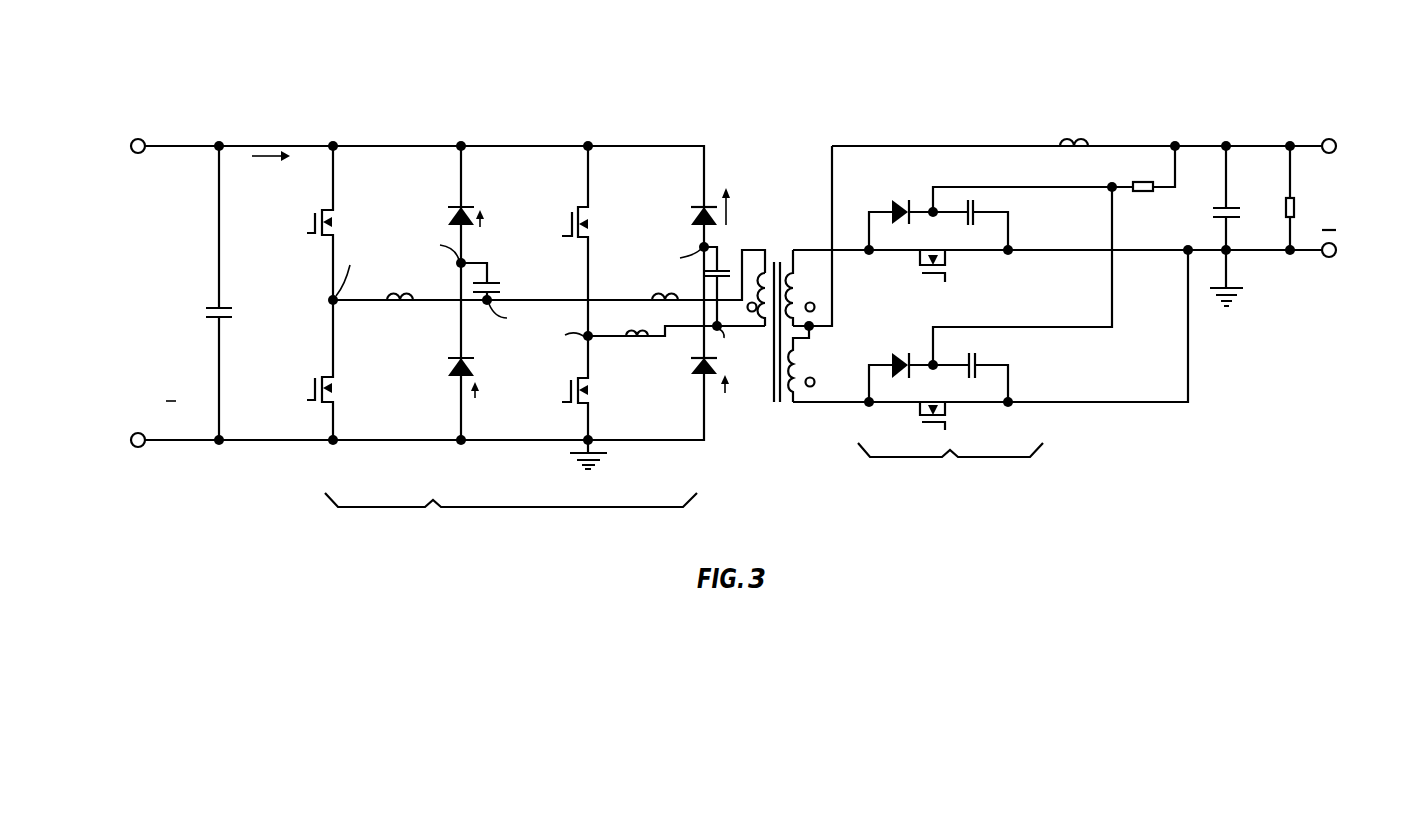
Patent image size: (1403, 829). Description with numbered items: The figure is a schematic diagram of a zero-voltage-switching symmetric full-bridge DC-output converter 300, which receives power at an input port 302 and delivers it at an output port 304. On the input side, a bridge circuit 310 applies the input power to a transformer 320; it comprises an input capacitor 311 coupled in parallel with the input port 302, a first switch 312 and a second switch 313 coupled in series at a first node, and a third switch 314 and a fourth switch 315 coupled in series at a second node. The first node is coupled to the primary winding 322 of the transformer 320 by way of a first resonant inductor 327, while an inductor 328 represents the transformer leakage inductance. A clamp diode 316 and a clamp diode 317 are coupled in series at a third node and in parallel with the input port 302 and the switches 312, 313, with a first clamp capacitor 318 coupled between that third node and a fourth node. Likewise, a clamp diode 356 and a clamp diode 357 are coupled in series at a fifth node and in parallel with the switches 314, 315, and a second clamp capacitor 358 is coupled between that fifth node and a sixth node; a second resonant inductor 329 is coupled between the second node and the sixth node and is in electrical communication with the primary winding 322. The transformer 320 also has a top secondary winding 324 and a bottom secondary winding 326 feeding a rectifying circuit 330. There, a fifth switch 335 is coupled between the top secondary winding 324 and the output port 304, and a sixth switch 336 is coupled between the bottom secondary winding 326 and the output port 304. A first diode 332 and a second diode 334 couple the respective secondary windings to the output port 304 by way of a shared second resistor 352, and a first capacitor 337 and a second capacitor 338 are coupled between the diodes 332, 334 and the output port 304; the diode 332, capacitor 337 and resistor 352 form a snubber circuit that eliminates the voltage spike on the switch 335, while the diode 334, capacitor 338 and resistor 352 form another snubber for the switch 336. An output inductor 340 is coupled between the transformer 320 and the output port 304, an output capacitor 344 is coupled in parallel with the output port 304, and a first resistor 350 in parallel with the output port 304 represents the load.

The ZVS symmetric full-bridge DC-output converter 300 is at (566, 92).
The input port 302 is at (144, 139).
The output port 304 is at (1326, 139).
The bridge circuit 310 is at (511, 519).
The input capacitor 311 is at (222, 304).
The first switch 312 is at (308, 233).
The second switch 313 is at (308, 399).
The third switch 314 is at (562, 236).
The fourth switch 315 is at (562, 402).
The clamp diode 316 is at (450, 215).
The clamp diode 317 is at (450, 372).
The first clamp capacitor 318 is at (502, 283).
The transformer 320 is at (800, 412).
The primary winding 322 is at (759, 325).
The top secondary winding 324 is at (793, 272).
The bottom secondary winding 326 is at (792, 392).
The first resonant inductor 327 is at (410, 293).
The inductor 328 is at (656, 294).
The second resonant inductor 329 is at (645, 330).
The rectifying circuit 330 is at (1025, 322).
The first diode 332 is at (890, 210).
The second diode 334 is at (891, 363).
The fifth switch 335 is at (930, 270).
The sixth switch 336 is at (950, 428).
The first capacitor 337 is at (985, 205).
The second capacitor 338 is at (985, 358).
The output inductor 340 is at (1090, 146).
The output capacitor 344 is at (1232, 205).
The first resistor 350 is at (1288, 218).
The second resistor 352 is at (1137, 192).
The clamp diode 356 is at (692, 217).
The clamp diode 357 is at (694, 370).
The second clamp capacitor 358 is at (722, 268).